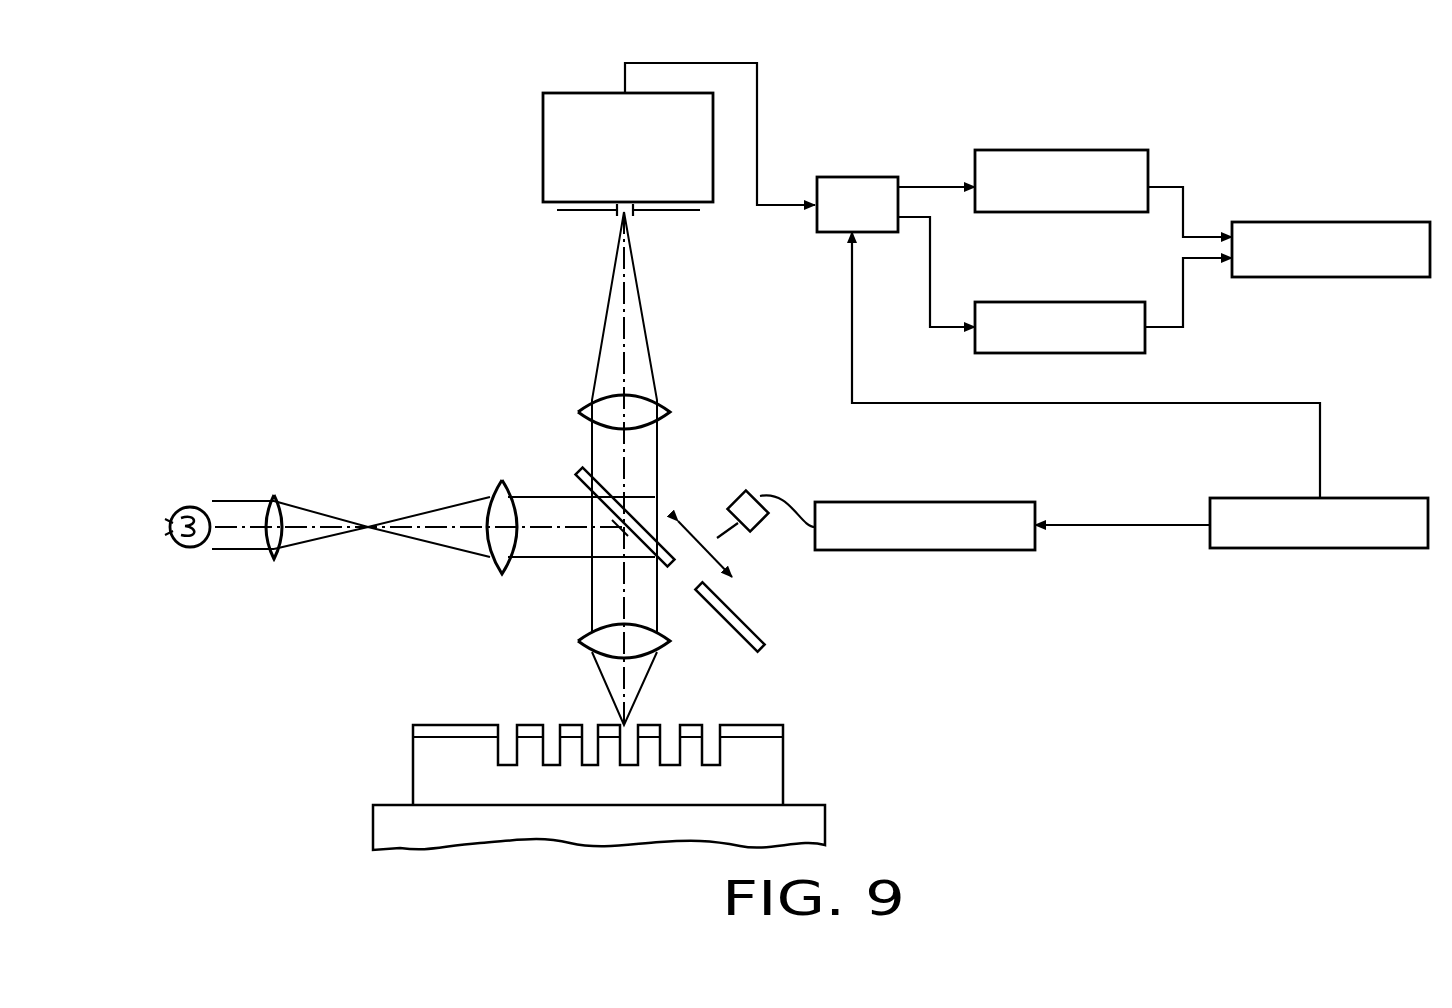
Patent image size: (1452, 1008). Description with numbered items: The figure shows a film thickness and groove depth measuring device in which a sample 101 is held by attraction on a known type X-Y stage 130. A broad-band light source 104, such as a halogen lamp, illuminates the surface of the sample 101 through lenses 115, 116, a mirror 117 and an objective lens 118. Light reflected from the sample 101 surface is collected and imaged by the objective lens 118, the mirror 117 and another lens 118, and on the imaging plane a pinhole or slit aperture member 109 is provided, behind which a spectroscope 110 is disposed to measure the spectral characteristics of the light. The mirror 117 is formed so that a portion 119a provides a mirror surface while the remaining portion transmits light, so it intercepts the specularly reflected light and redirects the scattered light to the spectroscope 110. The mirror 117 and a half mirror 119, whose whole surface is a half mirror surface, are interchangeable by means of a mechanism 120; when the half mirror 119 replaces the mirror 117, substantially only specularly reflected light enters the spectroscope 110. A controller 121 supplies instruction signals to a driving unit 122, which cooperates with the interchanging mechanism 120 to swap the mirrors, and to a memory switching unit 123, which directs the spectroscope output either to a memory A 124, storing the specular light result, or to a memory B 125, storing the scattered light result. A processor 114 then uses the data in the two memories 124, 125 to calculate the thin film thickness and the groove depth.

The sample 101 is at (770, 763).
The light source 104 is at (188, 506).
The aperture member 109 is at (575, 213).
The spectroscope 110 is at (543, 185).
The processor 114 is at (1365, 222).
The lens 115 is at (276, 495).
The lens 116 is at (503, 482).
The mirror 117 is at (663, 548).
The objective lens 118 is at (670, 412).
The half mirror 119 is at (765, 636).
The mirror surface portion 119a is at (627, 533).
The half mirror interchanging mechanism 120 is at (751, 490).
The controller 121 is at (1355, 498).
The driving unit 122 is at (950, 502).
The memory switching unit 123 is at (847, 176).
The memory A 124 is at (1068, 150).
The memory B 125 is at (1067, 302).
The X-Y stage 130 is at (385, 825).